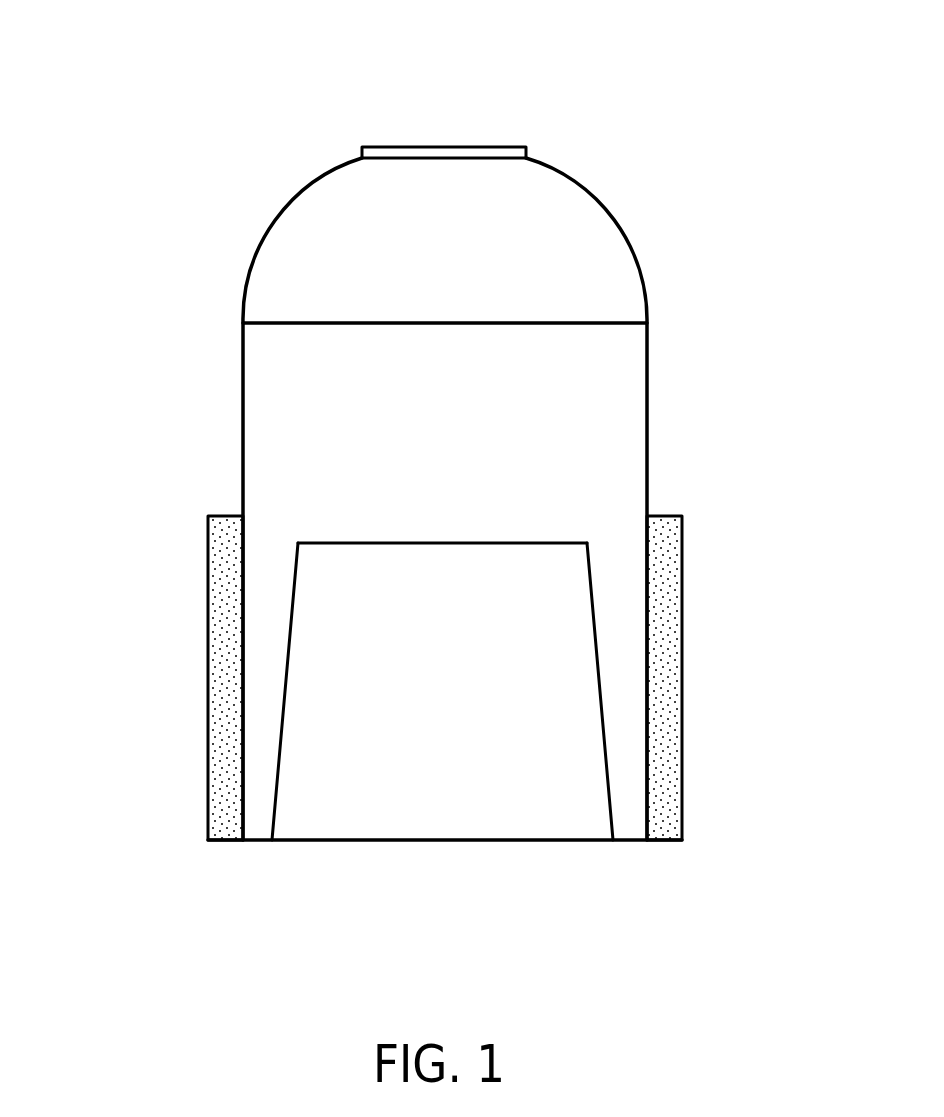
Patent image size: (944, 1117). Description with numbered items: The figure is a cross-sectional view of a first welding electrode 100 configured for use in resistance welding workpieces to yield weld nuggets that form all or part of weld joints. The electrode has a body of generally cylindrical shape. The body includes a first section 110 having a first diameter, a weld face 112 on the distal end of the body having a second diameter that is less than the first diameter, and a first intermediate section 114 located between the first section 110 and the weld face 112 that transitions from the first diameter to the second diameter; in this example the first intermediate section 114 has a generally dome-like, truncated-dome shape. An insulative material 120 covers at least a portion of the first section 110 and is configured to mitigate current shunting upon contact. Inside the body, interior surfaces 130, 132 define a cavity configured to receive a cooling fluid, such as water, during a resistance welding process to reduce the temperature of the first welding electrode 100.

The first welding electrode 100 is at (122, 88).
The first section 110 is at (648, 382).
The weld face 112 is at (478, 146).
The first intermediate section 114 is at (612, 222).
The insulative material 120 is at (208, 558).
The interior surface 130 is at (607, 778).
The interior surface 132 is at (441, 543).